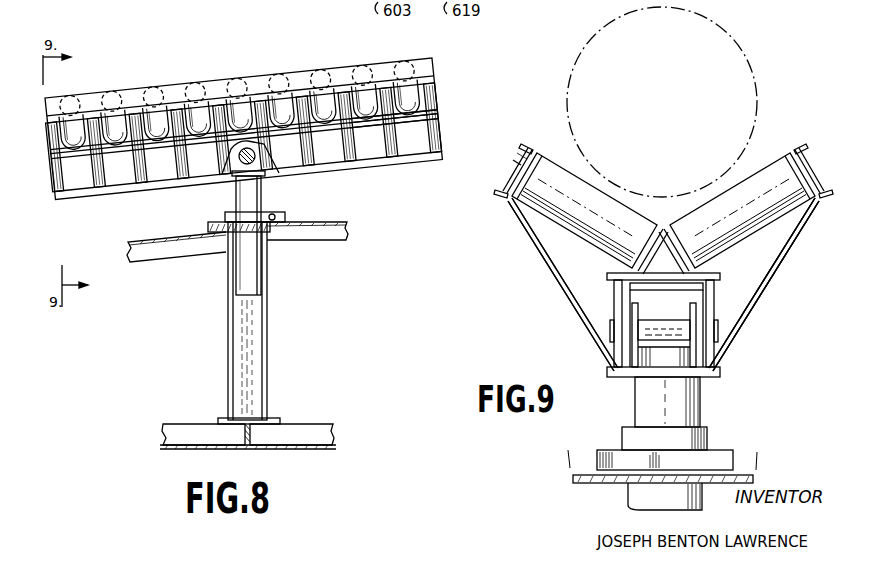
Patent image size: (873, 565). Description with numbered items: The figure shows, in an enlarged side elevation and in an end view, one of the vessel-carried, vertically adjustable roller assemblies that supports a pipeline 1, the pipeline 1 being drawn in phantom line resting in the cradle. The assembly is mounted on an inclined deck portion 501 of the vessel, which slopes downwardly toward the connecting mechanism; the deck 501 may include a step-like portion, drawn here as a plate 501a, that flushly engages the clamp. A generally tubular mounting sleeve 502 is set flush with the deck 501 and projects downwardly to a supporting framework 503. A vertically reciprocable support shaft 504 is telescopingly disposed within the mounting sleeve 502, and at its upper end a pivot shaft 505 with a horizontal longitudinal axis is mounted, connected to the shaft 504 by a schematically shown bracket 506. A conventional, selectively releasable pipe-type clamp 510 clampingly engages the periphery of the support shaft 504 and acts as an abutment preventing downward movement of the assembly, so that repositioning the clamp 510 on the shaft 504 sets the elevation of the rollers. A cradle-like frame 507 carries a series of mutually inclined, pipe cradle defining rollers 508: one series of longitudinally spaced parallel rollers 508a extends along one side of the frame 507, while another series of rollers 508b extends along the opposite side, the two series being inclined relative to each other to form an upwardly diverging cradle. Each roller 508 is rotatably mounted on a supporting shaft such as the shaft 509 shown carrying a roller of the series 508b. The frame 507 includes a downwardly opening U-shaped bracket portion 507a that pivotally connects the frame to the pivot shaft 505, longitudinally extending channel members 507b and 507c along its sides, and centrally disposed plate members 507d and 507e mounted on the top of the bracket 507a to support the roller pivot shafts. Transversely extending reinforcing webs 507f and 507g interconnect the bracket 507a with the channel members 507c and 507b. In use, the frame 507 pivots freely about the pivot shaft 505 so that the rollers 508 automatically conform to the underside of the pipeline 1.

In FIG. 9, the pipeline 1 is at (672, 89).
In FIG. 8, the inclined deck portion 501 is at (332, 238).
In FIG. 9, the inclined deck portion 501 is at (580, 477).
In FIG. 8, the mounting plate 501a is at (207, 226).
In FIG. 9, the mounting plate 501a is at (720, 459).
In FIG. 8, the tubular mounting sleeve 502 is at (230, 327).
In FIG. 8, the supporting framework 503 is at (291, 421).
In FIG. 8, the support shaft 504 is at (247, 280).
In FIG. 9, the support shaft 504 is at (640, 402).
In FIG. 8, the pivot shaft 505 is at (255, 159).
In FIG. 9, the pivot shaft 505 is at (657, 333).
In FIG. 8, the bracket 506 is at (228, 184).
In FIG. 9, the bracket 506 is at (692, 354).
In FIG. 8, the cradle-like frame 507 is at (434, 111).
In FIG. 9, the cradle-like frame 507 is at (581, 312).
In FIG. 8, the U-shaped bracket portion 507a is at (367, 143).
In FIG. 9, the U-shaped bracket portion 507a is at (729, 289).
In FIG. 9, the channel member 507b is at (492, 188).
In FIG. 9, the channel member 507c is at (807, 158).
In FIG. 9, the plate member 507d is at (661, 228).
In FIG. 8, the plate member 507e is at (408, 114).
In FIG. 9, the plate member 507e is at (663, 232).
In FIG. 9, the reinforcing web 507f is at (578, 285).
In FIG. 8, the reinforcing web 507g is at (392, 143).
In FIG. 9, the reinforcing web 507g is at (752, 300).
In FIG. 8, the roller 508 is at (422, 94).
In FIG. 9, the series of rollers 508a is at (738, 198).
In FIG. 9, the series of rollers 508b is at (603, 207).
In FIG. 9, the supporting shaft 509 is at (516, 160).
In FIG. 8, the pipe-type clamp 510 is at (256, 220).
In FIG. 9, the pipe-type clamp 510 is at (691, 441).